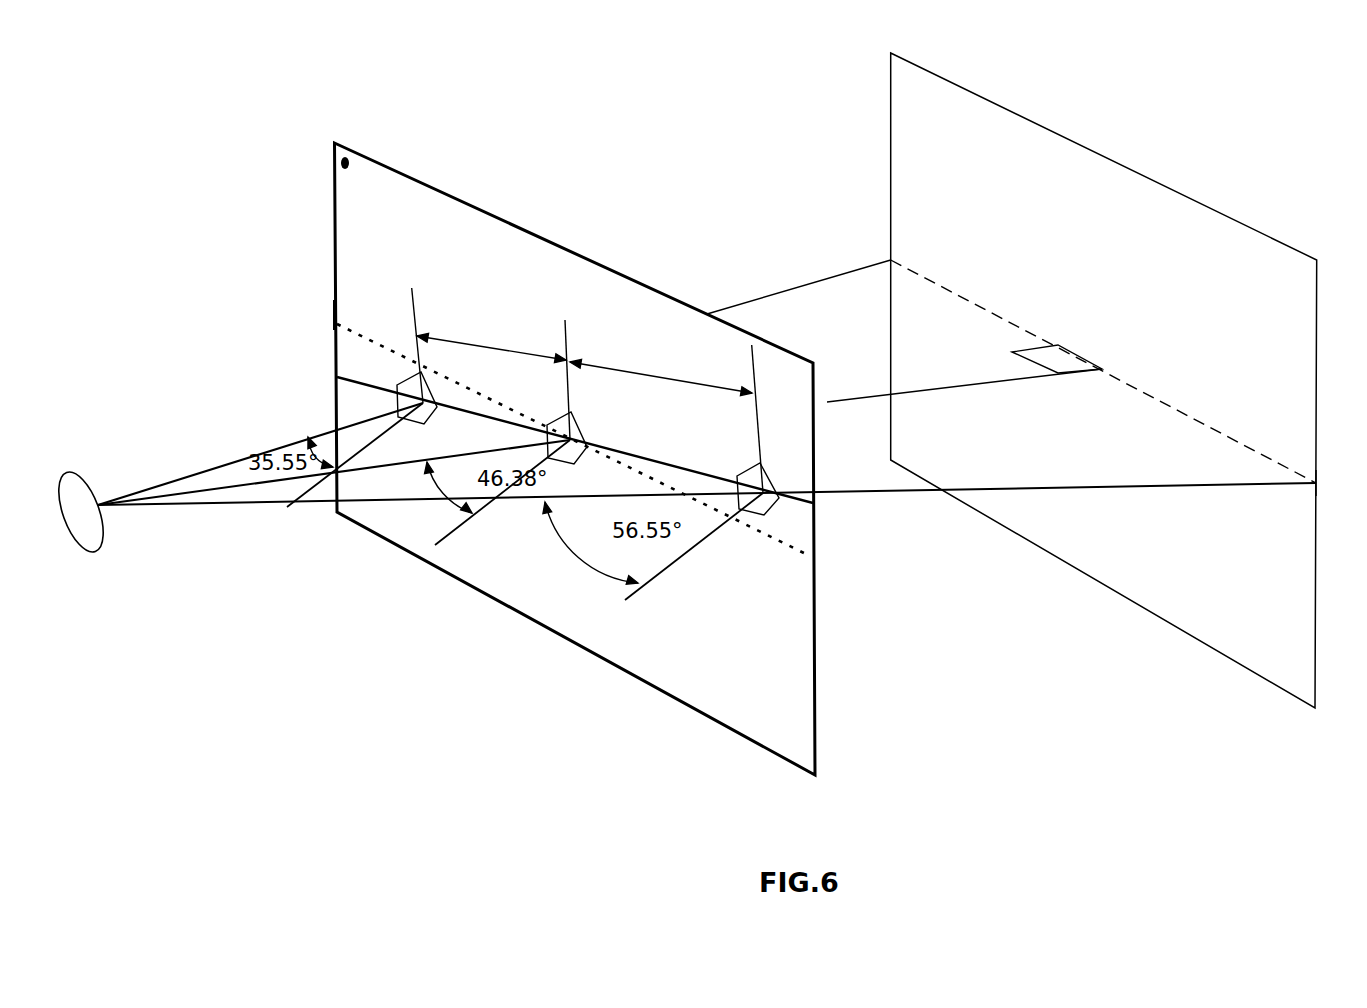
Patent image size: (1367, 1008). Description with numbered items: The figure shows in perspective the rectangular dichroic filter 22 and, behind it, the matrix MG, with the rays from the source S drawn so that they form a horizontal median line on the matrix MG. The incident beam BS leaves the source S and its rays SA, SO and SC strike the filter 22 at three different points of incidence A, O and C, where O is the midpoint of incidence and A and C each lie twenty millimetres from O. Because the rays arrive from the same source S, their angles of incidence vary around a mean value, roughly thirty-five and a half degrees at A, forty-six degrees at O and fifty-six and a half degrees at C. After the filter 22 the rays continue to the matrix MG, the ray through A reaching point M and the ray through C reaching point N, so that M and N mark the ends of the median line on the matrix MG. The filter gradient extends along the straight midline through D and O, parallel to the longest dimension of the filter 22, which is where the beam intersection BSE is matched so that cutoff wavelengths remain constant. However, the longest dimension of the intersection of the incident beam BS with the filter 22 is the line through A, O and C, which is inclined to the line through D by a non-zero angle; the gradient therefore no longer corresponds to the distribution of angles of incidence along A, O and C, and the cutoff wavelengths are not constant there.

The rectangular dichroic filter 22 is at (700, 659).
The point D is at (324, 307).
The light source point S is at (81, 511).
The incident beam BS is at (130, 508).
The point of incidence A is at (362, 397).
The midpoint of incidence O is at (508, 432).
The point of incidence C is at (661, 472).
The matrix MG is at (1243, 587).
The point M is at (1011, 357).
The point N is at (1332, 486).
The incident beam intersection along DOE BSE is at (827, 402).